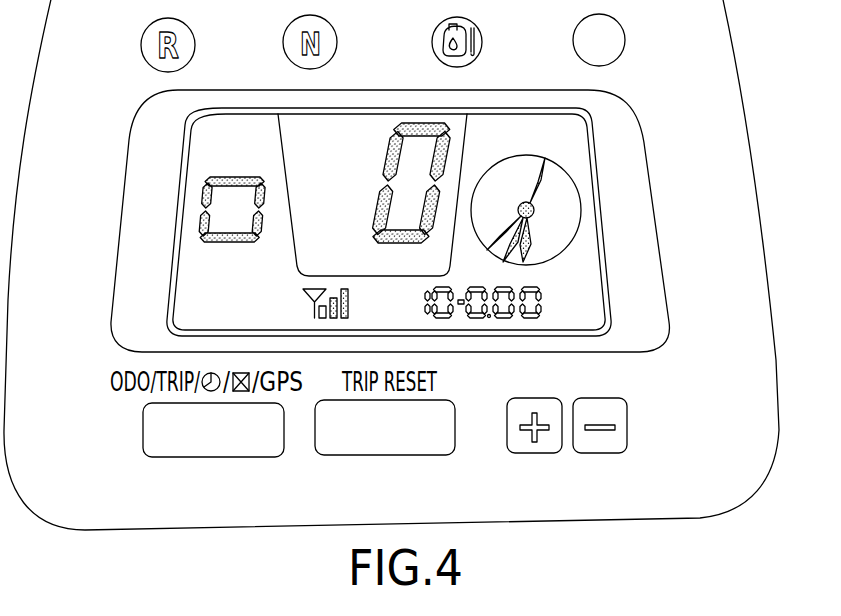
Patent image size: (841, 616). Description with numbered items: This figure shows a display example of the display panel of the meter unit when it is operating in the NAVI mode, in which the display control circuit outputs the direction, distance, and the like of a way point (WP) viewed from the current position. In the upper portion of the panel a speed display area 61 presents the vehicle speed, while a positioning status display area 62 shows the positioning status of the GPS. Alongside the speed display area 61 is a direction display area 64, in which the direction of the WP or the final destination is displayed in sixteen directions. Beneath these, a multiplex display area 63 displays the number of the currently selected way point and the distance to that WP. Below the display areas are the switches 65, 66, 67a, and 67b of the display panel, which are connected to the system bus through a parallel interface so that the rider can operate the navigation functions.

The speed display area 61 is at (376, 125).
The positioning status display area 62 is at (302, 287).
The multiplex display area 63 is at (547, 310).
The direction display area 64 is at (578, 200).
The switch 65 is at (267, 448).
The switch 66 is at (433, 447).
The switch 67a is at (550, 448).
The switch 67b is at (626, 440).